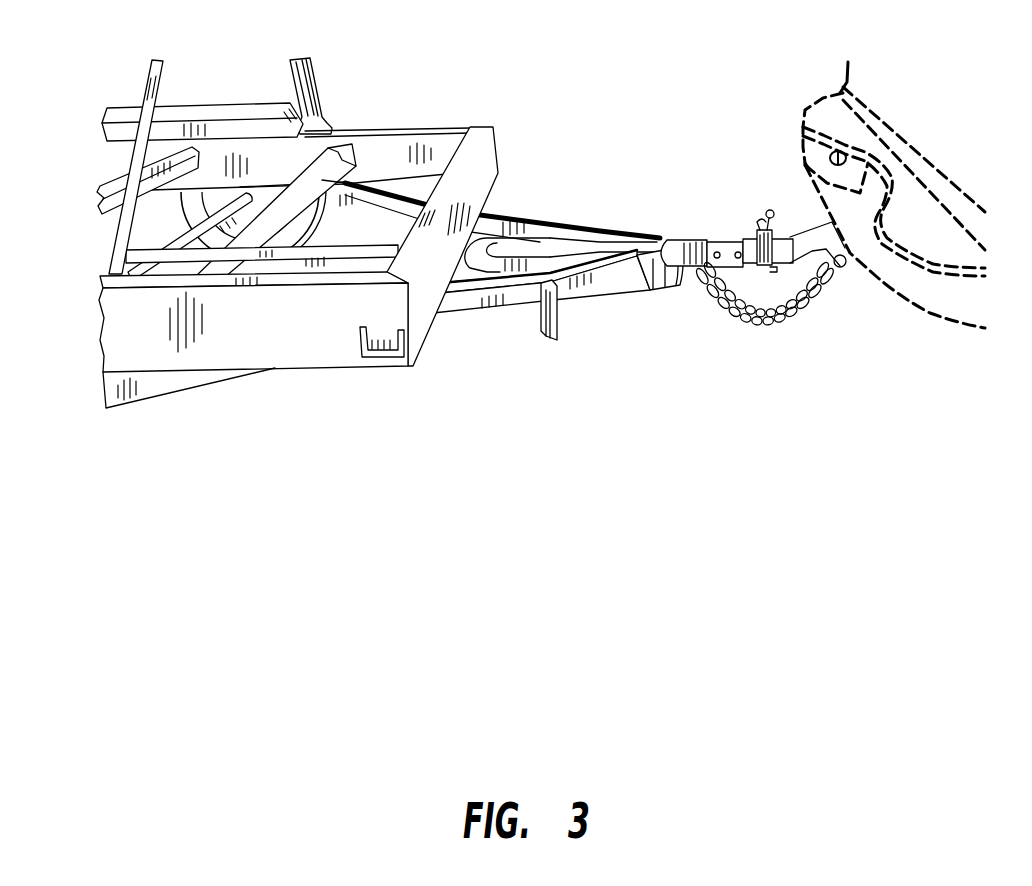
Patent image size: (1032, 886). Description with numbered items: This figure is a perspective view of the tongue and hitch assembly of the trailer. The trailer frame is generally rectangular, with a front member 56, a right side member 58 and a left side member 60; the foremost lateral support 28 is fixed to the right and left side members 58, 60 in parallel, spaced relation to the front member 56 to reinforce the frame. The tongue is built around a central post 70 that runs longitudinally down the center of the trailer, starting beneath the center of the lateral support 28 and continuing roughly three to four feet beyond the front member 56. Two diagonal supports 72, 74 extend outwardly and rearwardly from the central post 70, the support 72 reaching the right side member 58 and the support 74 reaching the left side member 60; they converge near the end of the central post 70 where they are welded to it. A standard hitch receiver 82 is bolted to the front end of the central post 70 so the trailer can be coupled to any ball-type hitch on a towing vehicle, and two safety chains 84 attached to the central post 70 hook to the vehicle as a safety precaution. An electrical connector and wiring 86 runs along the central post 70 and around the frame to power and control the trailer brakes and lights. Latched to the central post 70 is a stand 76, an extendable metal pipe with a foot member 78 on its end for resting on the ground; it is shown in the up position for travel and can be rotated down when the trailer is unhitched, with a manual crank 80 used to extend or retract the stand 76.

The lateral support 28 is at (317, 118).
The front member 56 is at (462, 174).
The right side member 58 is at (378, 137).
The left side member 60 is at (278, 337).
The central post 70 is at (368, 242).
The diagonal support 72 is at (558, 222).
The diagonal support 74 is at (480, 302).
The stand 76 is at (618, 292).
The foot member 78 is at (558, 320).
The manual crank 80 is at (658, 238).
The hitch receiver 82 is at (748, 232).
The safety chains 84 is at (792, 338).
The electrical connector and wiring 86 is at (490, 246).